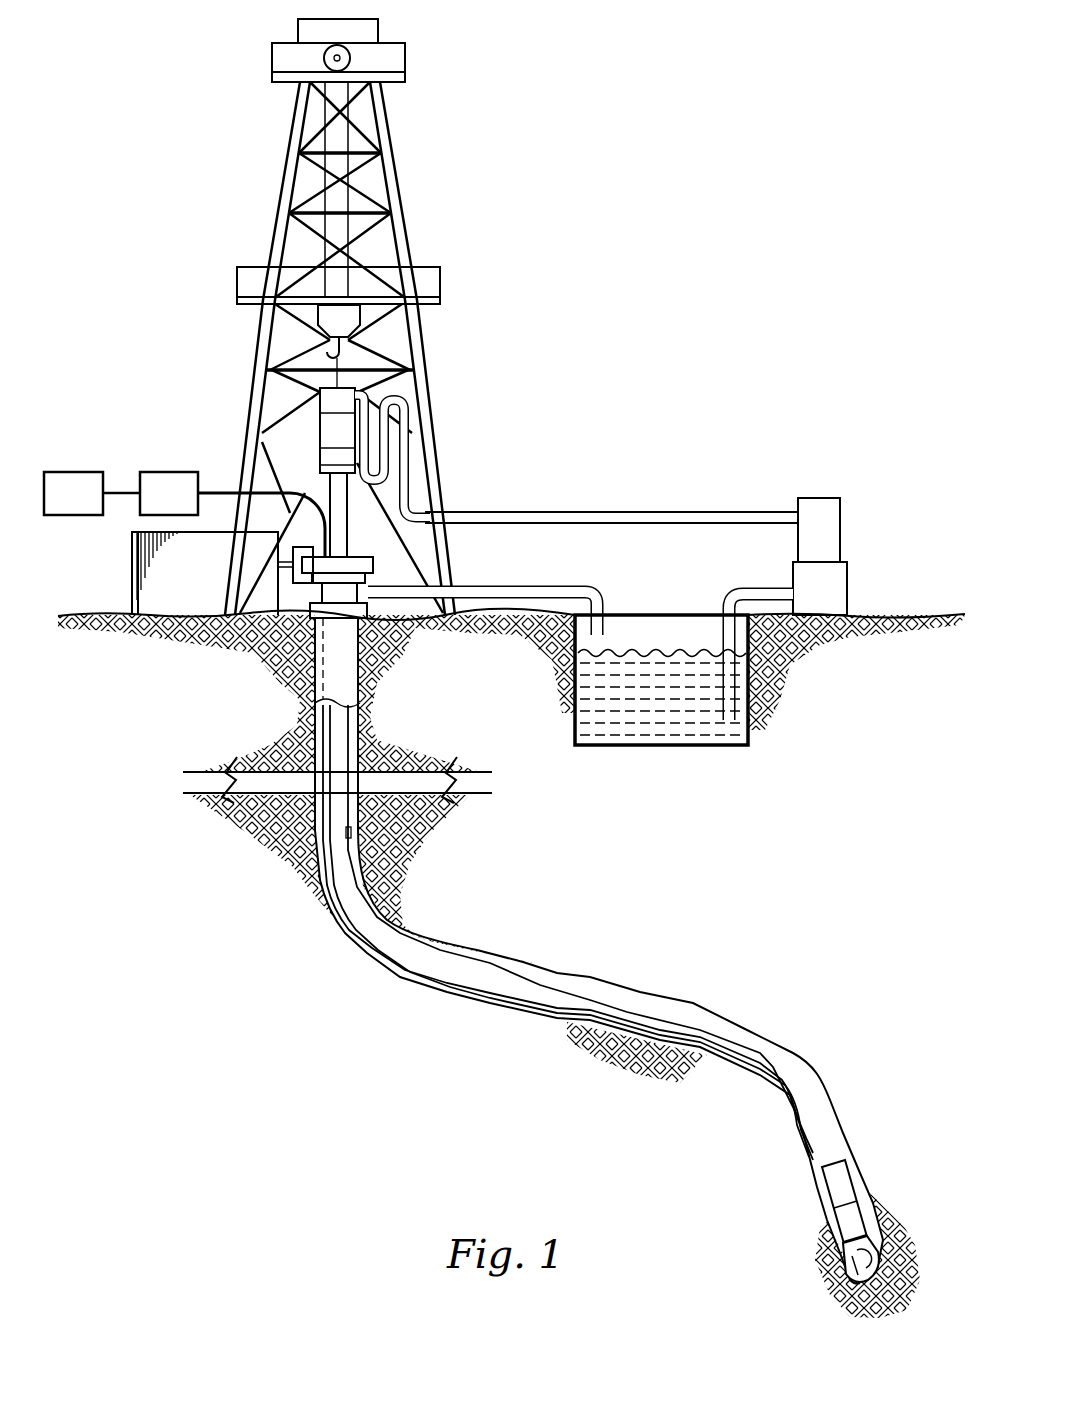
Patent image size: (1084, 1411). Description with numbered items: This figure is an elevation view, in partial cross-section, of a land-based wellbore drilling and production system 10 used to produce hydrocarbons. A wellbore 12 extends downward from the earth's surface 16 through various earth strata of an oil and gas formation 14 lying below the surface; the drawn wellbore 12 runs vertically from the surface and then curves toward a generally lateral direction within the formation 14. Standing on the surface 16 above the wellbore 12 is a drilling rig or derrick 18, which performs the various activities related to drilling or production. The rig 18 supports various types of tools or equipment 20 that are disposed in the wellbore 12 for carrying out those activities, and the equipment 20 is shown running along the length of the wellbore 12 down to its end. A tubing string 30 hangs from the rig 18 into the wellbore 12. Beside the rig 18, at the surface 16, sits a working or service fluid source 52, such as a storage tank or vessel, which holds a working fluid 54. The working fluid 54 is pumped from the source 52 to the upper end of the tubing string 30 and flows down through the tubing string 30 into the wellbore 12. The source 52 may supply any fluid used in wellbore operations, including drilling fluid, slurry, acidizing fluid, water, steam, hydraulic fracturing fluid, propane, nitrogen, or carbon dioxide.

The wellbore drilling and production system 10 is at (153, 60).
The wellbore 12 is at (396, 984).
The oil and gas formation 14 is at (528, 876).
The earth's surface 16 is at (905, 612).
The drilling rig or derrick 18 is at (393, 183).
The tools or equipment 20 is at (582, 998).
The tubing string 30 is at (338, 735).
The working or service fluid source 52 is at (662, 746).
The working fluid 54 is at (653, 663).